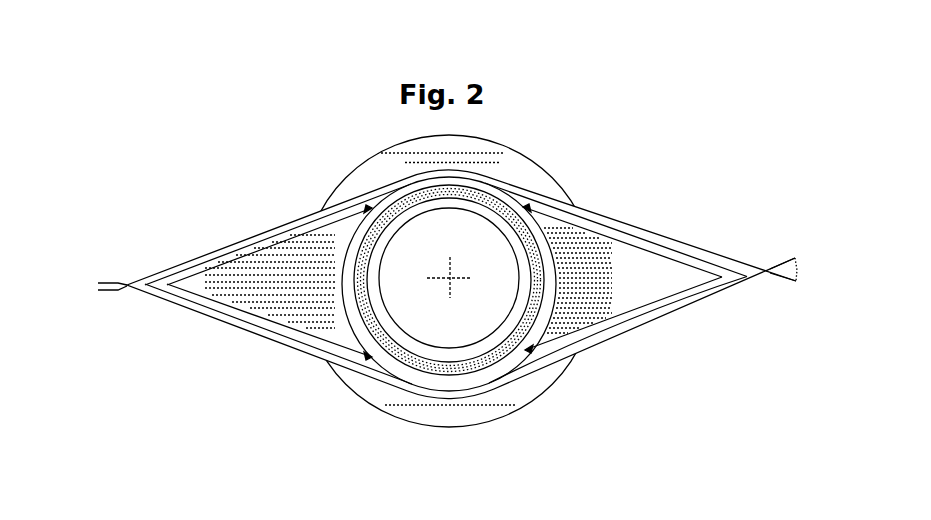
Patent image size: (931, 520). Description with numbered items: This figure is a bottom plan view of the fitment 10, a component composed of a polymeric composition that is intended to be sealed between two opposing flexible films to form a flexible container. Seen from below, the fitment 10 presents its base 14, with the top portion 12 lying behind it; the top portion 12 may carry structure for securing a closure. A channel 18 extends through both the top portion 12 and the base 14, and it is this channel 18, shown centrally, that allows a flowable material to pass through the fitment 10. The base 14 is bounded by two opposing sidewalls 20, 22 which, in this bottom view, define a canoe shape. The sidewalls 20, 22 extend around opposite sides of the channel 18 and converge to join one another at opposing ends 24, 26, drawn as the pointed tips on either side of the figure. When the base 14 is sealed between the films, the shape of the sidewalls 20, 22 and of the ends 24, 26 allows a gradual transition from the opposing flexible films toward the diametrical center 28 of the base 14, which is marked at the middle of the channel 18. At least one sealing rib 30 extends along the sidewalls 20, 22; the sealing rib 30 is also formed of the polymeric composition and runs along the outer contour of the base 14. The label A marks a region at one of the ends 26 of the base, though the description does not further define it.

The fitment 10 is at (613, 158).
The top portion 12 is at (533, 147).
The base 14 is at (641, 220).
The channel 18 is at (411, 239).
The sidewall 20 is at (263, 237).
The sidewall 22 is at (271, 339).
The end 24 is at (93, 287).
The end 26 is at (799, 284).
The diametrical center 28 is at (433, 302).
The sealing rib 30 is at (218, 246).
The detail region A is at (797, 259).